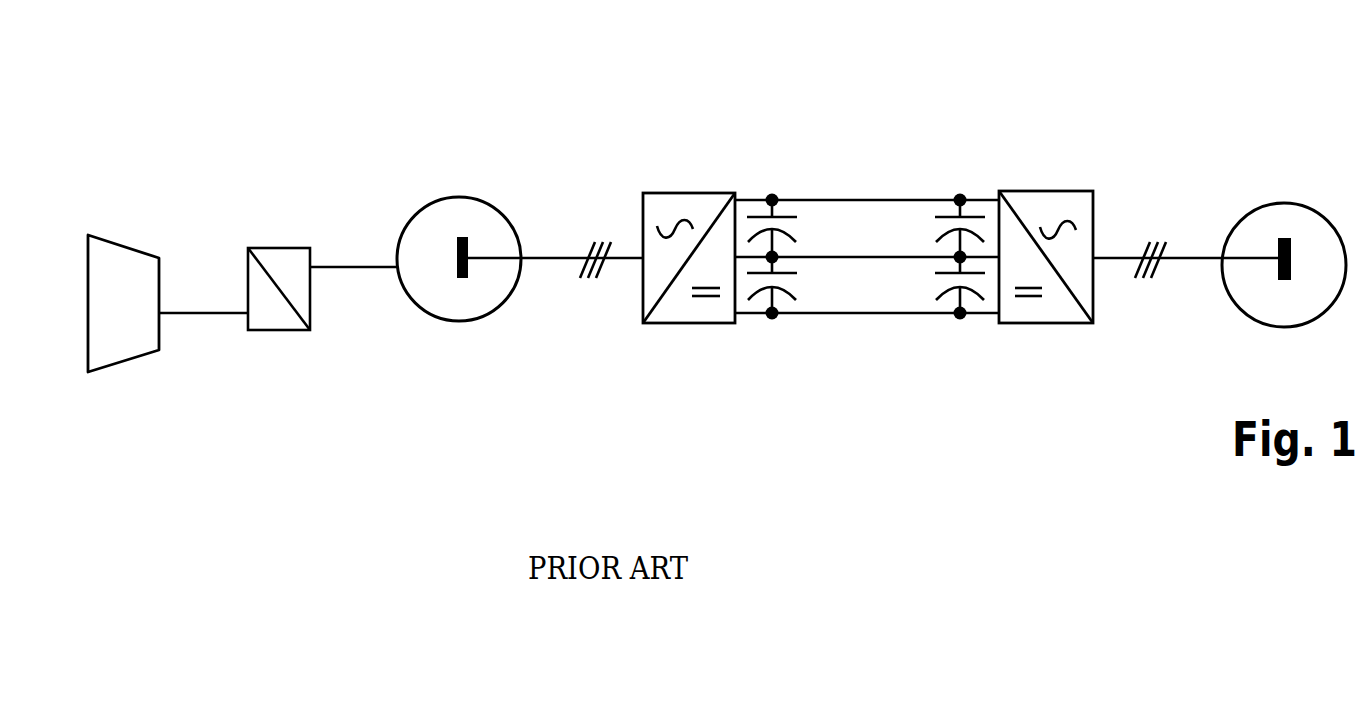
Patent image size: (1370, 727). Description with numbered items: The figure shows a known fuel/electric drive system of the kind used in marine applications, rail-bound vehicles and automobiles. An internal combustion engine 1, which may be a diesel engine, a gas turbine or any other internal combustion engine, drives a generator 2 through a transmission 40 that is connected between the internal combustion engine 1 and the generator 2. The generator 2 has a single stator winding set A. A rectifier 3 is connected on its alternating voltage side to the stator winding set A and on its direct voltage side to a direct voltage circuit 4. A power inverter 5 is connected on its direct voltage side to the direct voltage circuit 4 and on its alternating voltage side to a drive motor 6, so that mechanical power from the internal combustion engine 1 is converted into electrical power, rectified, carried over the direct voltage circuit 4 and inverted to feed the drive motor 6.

The internal combustion engine 1 is at (127, 247).
The transmission 40 is at (290, 248).
The generator 2 is at (462, 197).
The stator winding set A is at (467, 238).
The first rectifier 3 is at (692, 192).
The first direct voltage circuit 4 is at (865, 172).
The first power inverter 5 is at (1055, 192).
The drive motor 6 is at (1278, 203).